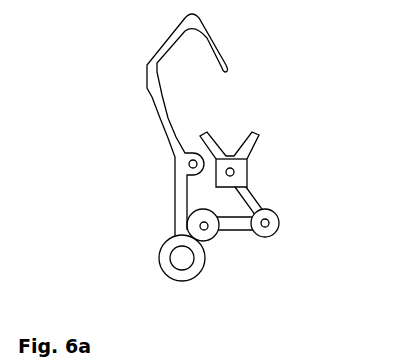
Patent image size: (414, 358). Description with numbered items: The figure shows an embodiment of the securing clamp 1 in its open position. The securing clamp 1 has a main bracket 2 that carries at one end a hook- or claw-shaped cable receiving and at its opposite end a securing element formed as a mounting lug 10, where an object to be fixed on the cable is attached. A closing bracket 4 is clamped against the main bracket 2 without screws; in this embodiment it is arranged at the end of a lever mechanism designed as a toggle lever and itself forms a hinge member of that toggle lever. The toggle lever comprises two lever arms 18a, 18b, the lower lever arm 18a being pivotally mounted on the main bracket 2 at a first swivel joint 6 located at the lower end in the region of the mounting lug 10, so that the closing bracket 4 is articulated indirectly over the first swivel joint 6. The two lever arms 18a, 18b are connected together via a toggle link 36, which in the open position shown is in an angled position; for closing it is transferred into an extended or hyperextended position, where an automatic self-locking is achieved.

The securing clamp 1 is at (276, 55).
The main bracket 2 is at (154, 57).
The closing bracket 4 is at (255, 144).
The first swivel joint 6 is at (204, 229).
The mounting lug 10 is at (177, 262).
The lower lever arm 18a is at (238, 223).
The upper lever arm 18b is at (249, 193).
The toggle link 36 is at (270, 222).